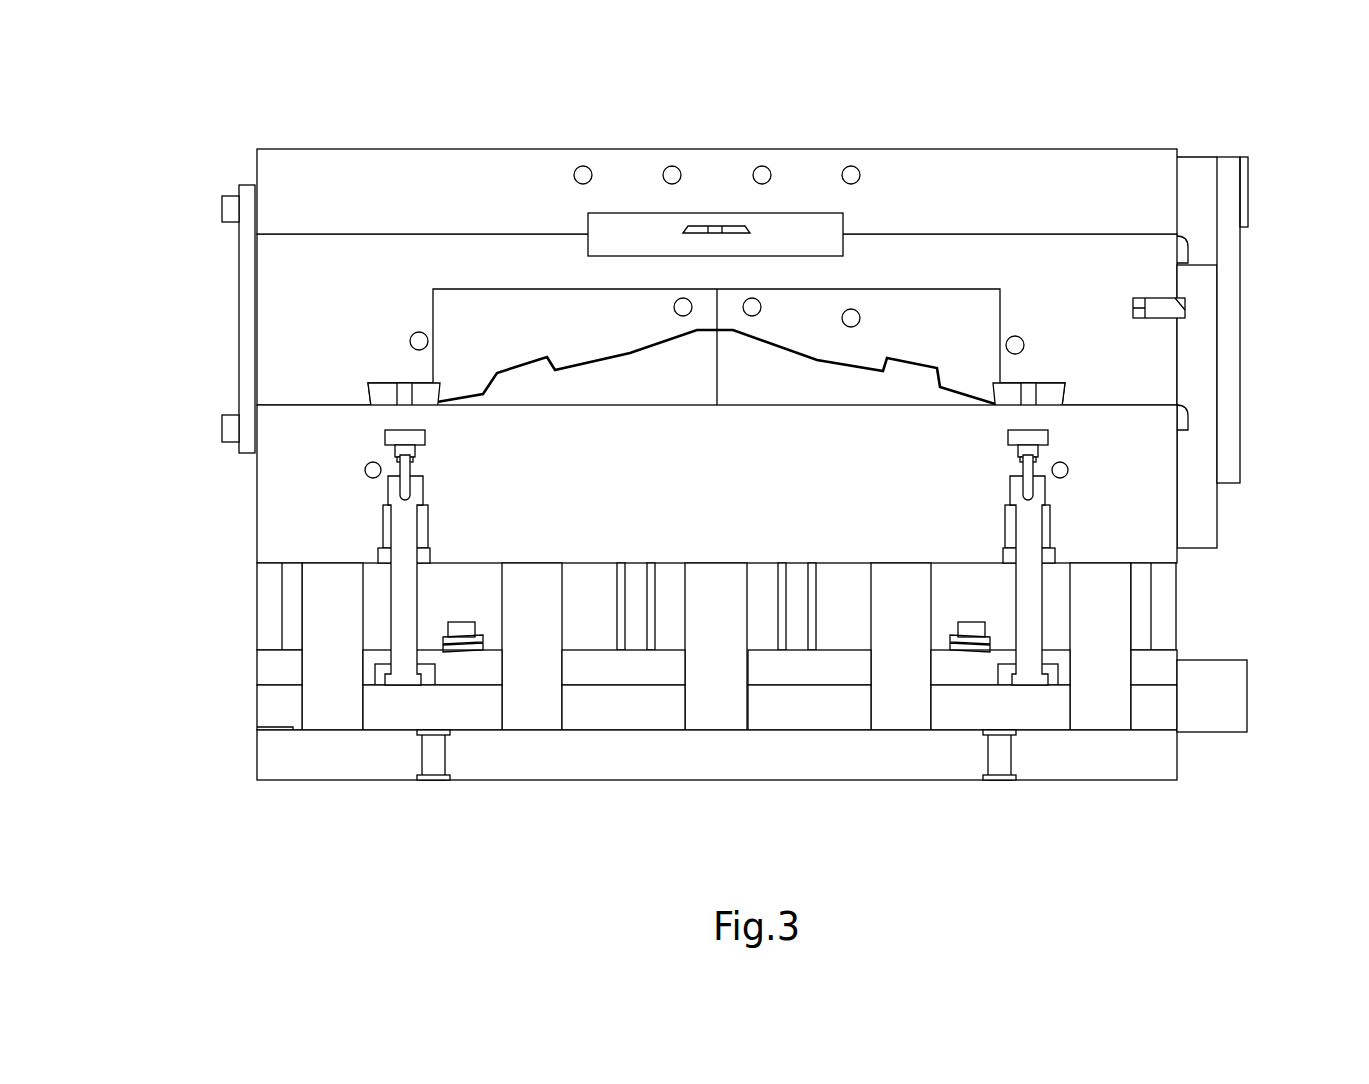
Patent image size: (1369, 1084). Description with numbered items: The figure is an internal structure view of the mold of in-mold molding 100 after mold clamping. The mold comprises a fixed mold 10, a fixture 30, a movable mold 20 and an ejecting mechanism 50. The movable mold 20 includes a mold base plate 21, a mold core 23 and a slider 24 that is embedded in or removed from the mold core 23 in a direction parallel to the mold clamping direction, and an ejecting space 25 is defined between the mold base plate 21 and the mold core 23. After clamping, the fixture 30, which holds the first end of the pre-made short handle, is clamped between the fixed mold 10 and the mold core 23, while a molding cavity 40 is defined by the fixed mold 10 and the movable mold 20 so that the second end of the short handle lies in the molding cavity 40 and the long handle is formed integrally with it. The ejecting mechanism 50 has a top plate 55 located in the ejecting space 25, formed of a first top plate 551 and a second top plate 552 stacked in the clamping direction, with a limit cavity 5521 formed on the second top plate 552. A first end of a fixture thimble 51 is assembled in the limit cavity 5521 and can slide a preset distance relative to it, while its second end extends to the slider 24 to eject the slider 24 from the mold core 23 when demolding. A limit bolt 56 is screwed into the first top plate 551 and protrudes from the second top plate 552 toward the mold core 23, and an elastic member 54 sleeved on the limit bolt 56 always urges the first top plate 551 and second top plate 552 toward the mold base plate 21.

The mold of in-mold molding 100 is at (699, 297).
The fixed mold 10 is at (232, 245).
The fixture 30 is at (730, 261).
The molding cavity 40 is at (565, 365).
The movable mold 20 is at (711, 484).
The mold core 23 is at (278, 448).
The slider 24 is at (390, 448).
The ejecting space 25 is at (290, 588).
The ejecting mechanism 50 is at (711, 666).
The fixture thimble 51 is at (403, 572).
The top plate 55 is at (644, 762).
The second top plate 552 is at (662, 762).
The first top plate 551 is at (267, 710).
The limit cavity 5521 is at (383, 680).
The elastic member 54 is at (447, 650).
The limit bolt 56 is at (463, 648).
The mold base plate 21 is at (273, 767).